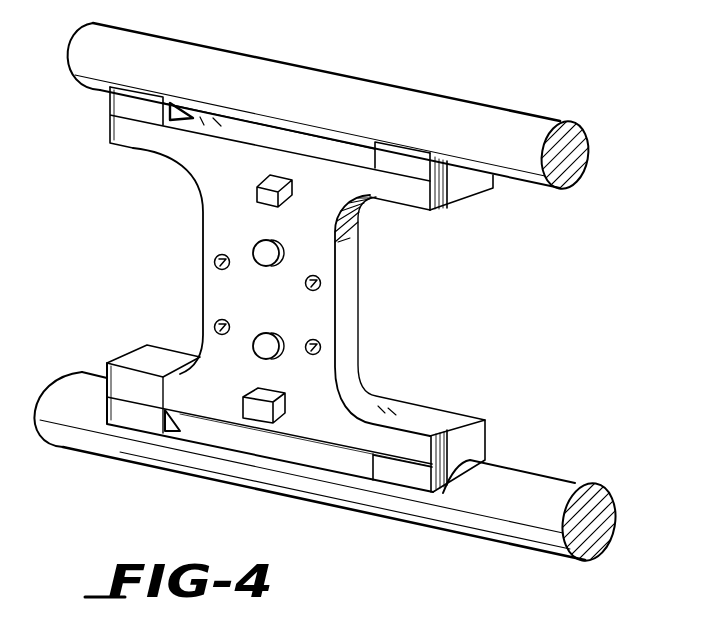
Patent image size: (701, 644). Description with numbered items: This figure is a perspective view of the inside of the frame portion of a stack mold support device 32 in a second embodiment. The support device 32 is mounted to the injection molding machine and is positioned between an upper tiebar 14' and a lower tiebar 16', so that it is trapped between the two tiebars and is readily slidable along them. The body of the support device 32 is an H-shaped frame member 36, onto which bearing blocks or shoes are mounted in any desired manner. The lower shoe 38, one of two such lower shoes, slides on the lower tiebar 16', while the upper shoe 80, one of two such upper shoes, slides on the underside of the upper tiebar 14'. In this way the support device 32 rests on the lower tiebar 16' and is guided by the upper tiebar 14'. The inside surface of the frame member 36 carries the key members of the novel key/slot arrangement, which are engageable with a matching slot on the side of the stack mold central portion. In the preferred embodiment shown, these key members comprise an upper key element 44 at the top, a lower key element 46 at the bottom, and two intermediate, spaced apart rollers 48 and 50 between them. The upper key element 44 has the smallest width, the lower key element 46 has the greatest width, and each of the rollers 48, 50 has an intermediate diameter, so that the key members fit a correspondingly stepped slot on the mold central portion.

The upper tiebar 14' is at (379, 111).
The lower tiebar 16' is at (367, 484).
The stack mold support device 32 is at (368, 298).
The H-shaped frame member 36 is at (305, 417).
The lower shoe 38 is at (405, 475).
The upper key element 44 is at (257, 192).
The lower key element 46 is at (255, 410).
The roller 48 is at (255, 252).
The roller 50 is at (256, 345).
The upper shoe 80 is at (403, 158).